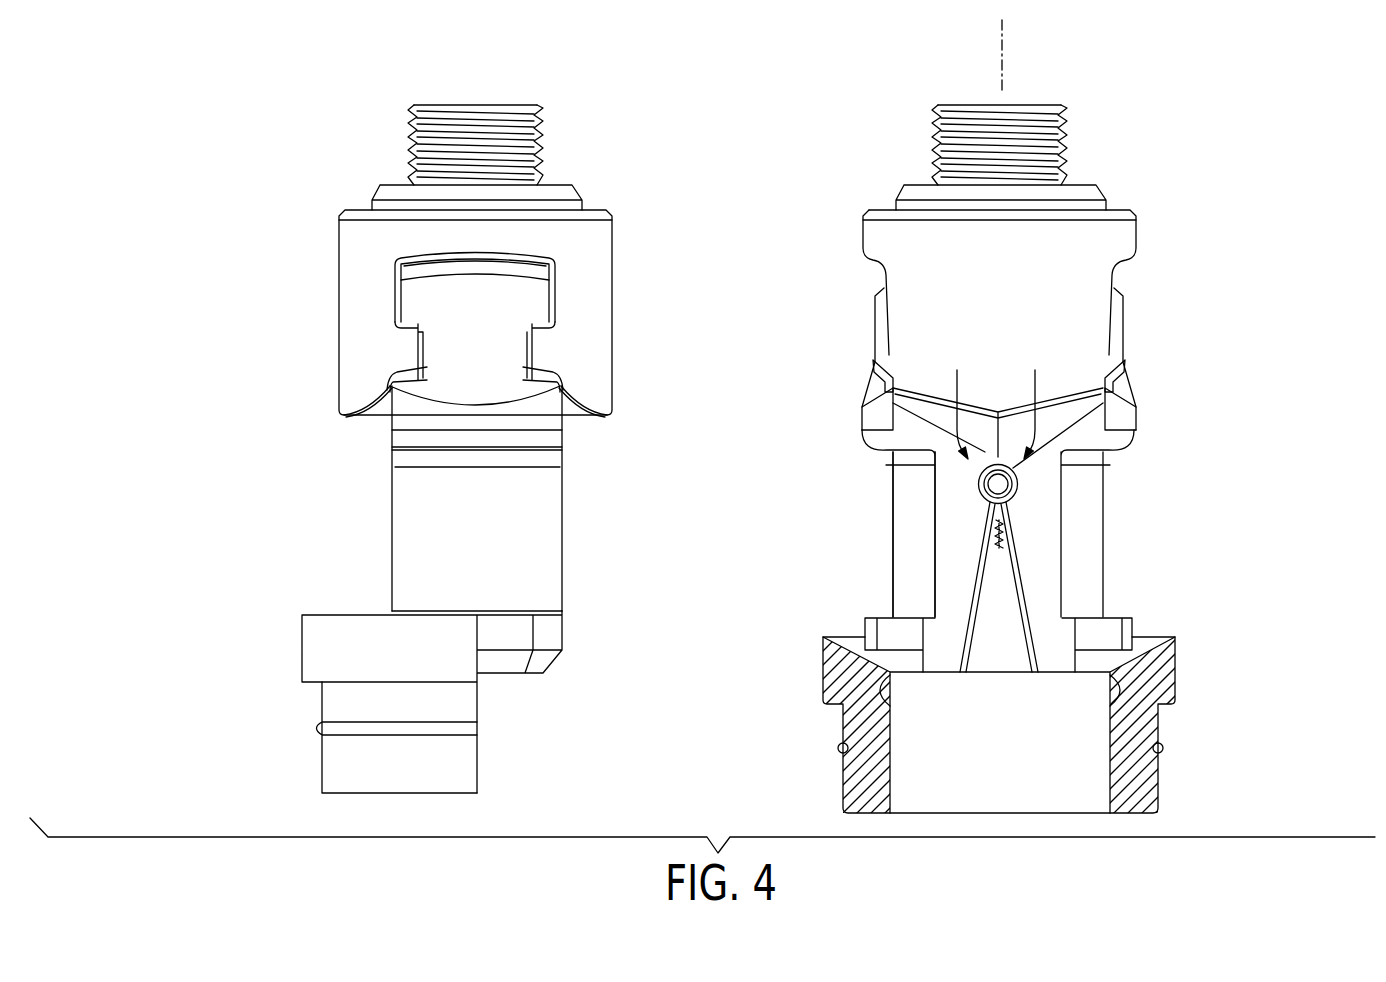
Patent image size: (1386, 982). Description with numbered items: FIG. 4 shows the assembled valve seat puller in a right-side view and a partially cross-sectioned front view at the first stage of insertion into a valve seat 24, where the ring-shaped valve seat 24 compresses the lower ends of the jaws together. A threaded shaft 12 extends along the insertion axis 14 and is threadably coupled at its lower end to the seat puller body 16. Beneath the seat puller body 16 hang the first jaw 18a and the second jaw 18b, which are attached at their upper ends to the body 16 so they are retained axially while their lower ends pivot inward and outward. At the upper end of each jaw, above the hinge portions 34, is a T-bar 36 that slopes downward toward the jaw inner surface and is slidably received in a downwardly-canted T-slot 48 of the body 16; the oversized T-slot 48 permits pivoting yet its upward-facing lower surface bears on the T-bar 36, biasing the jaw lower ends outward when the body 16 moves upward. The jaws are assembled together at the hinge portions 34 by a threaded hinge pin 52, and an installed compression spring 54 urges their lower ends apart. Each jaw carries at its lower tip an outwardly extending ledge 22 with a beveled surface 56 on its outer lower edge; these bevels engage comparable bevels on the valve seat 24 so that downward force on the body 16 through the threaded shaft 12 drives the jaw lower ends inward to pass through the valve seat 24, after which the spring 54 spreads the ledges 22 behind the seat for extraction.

The threaded shaft 12 is at (545, 136).
The insertion axis 14 is at (1003, 56).
The seat puller body 16 is at (1078, 293).
The first jaw 18a is at (540, 545).
The second jaw 18b is at (953, 535).
The ledge 22 is at (520, 618).
The valve seat 24 is at (1150, 778).
The hinge portion 34 is at (995, 401).
The T-bar 36 is at (535, 297).
The T-slot 48 is at (410, 268).
The threaded hinge pin 52 is at (1086, 437).
The compression spring 54 is at (1002, 547).
The beveled surface 56 is at (893, 704).